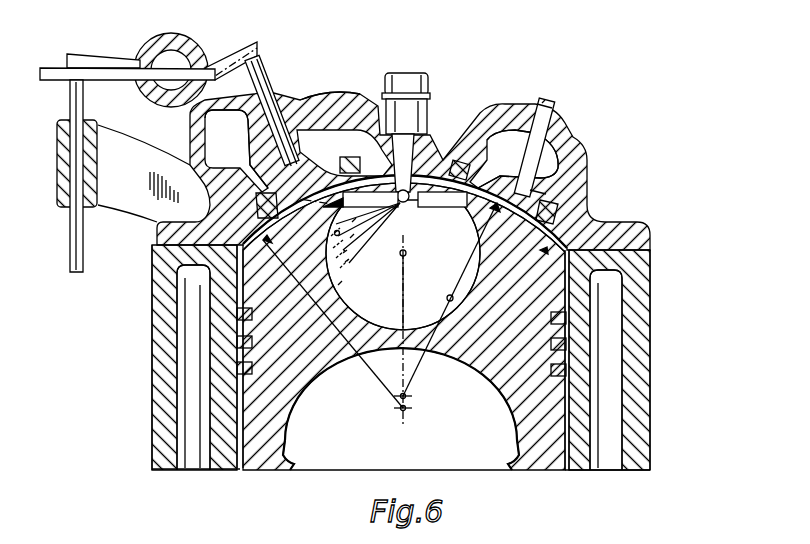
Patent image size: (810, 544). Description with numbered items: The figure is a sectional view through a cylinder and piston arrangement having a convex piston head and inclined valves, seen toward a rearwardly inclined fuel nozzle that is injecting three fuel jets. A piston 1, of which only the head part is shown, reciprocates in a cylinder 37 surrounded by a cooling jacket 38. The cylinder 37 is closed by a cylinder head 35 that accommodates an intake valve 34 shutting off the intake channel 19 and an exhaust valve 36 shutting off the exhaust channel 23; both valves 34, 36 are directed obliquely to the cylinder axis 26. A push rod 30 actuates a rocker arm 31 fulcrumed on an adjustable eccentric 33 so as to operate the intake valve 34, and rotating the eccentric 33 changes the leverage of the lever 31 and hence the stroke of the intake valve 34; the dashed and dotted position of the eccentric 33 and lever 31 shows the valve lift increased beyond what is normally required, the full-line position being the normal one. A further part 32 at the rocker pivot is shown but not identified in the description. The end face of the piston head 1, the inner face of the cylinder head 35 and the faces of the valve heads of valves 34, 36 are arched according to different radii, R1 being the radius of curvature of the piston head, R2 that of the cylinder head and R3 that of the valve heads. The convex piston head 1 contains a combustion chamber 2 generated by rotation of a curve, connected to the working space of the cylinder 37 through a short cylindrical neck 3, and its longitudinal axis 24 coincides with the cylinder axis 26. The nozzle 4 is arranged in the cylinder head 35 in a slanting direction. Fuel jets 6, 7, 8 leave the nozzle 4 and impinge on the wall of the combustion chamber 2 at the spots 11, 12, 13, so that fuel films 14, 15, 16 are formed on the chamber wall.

The piston 1 is at (251, 470).
The combustion chamber 2 is at (383, 322).
The short cylindrical neck 3 is at (433, 200).
The nozzle 4 is at (414, 142).
The fuel jet 6 is at (406, 212).
The fuel jet 7 is at (402, 211).
The fuel jet 8 is at (397, 208).
The spot 11 is at (352, 222).
The spot 12 is at (350, 238).
The spot 13 is at (345, 262).
The film 14 is at (362, 163).
The film 15 is at (343, 253).
The film 16 is at (338, 285).
The intake channel 19 is at (228, 137).
The exhaust channel 23 is at (548, 170).
The longitudinal axis 24 is at (405, 260).
The cylinder axis 26 is at (405, 425).
The push rod 30 is at (70, 250).
The rocker arm 31 is at (55, 77).
The pivot 32 is at (158, 66).
The adjustable eccentric 33 is at (226, 43).
The intake valve 34 is at (275, 115).
The cylinder head 35 is at (385, 118).
The exhaust valve 36 is at (548, 120).
The cylinder 37 is at (214, 395).
The cooling jacket 38 is at (193, 350).
The radius of curvature of the piston head R1 is at (382, 392).
The radius of curvature of the cylinder head R2 is at (428, 372).
The radius of curvature of the valve heads R3 is at (588, 210).